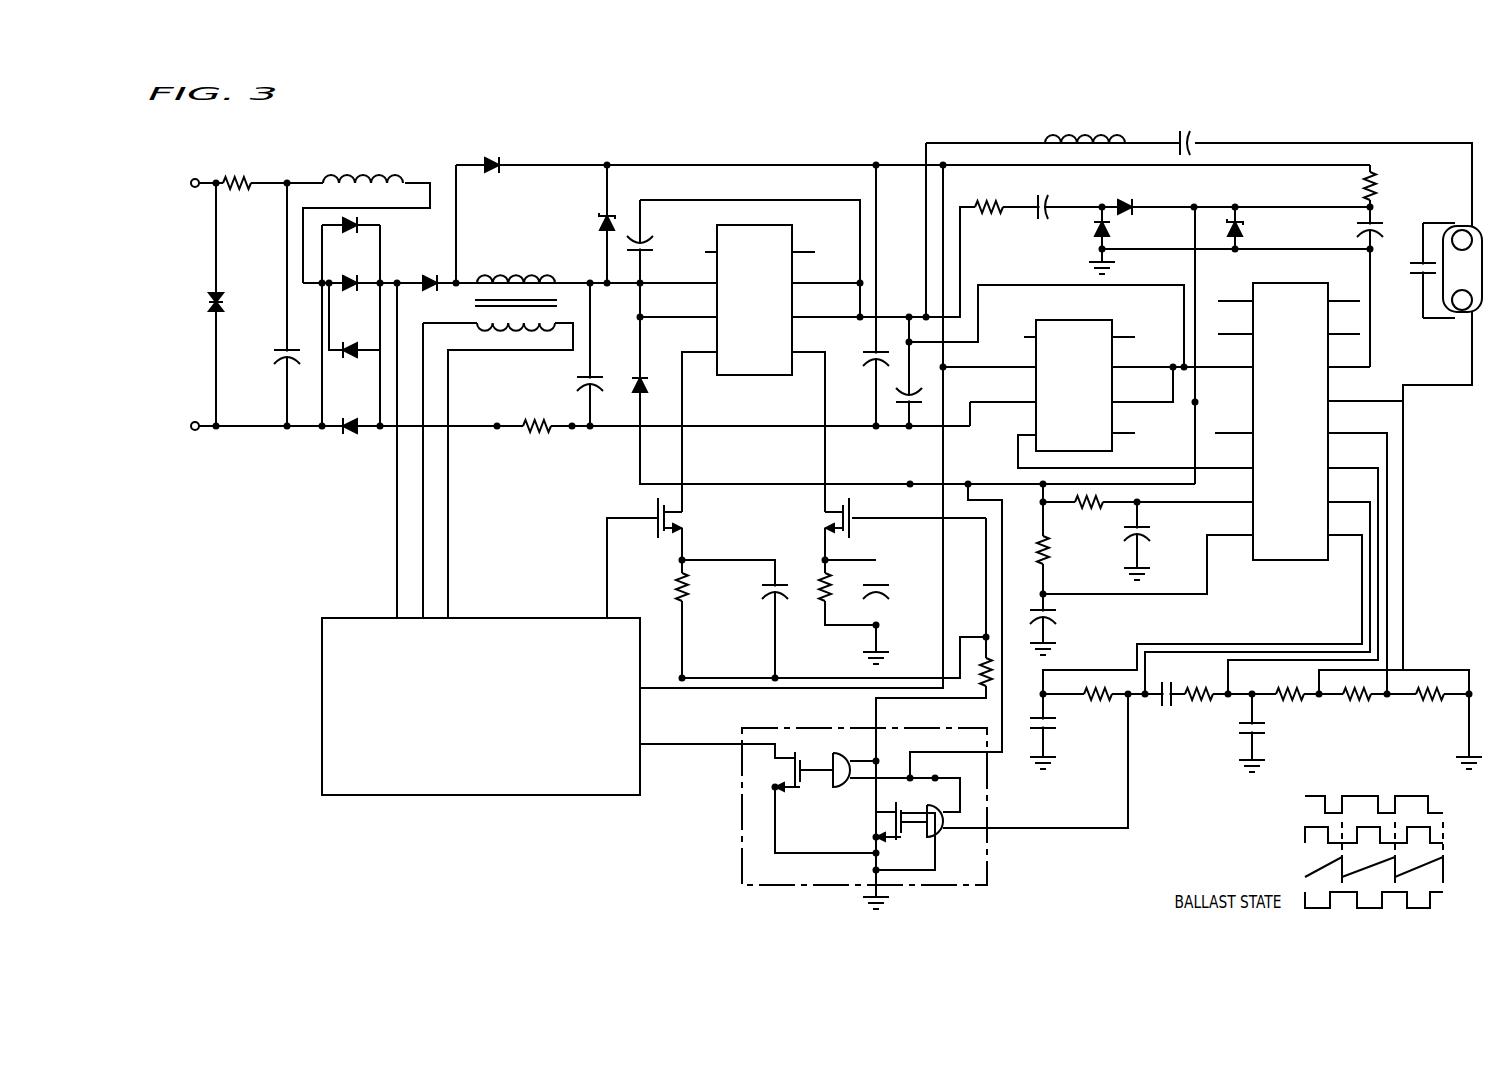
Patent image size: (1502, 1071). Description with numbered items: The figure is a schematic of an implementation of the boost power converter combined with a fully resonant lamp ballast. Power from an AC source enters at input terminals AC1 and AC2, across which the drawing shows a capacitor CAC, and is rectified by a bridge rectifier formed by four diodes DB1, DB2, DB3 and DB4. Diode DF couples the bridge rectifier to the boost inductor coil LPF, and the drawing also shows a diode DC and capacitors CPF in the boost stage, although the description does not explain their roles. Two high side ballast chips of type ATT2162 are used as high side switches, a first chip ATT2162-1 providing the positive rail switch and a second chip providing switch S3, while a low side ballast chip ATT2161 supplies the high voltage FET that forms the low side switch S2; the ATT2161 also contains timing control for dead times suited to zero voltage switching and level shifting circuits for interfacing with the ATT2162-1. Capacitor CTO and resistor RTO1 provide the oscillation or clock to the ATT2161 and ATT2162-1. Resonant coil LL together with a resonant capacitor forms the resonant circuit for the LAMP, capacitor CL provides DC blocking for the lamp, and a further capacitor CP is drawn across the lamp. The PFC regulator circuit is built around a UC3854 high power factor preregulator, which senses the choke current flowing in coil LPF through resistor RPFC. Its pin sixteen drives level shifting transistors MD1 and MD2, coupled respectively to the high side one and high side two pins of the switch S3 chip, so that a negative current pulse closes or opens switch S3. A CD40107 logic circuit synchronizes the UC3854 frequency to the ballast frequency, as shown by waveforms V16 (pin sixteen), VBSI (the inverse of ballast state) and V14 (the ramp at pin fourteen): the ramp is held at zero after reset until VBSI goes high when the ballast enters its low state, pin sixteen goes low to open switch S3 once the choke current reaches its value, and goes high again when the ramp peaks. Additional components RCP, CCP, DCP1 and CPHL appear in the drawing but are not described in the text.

The input terminal AC1 is at (177, 184).
The input terminal AC2 is at (177, 428).
The AC input capacitor CAC is at (266, 357).
The bridge rectifier diode DB1 is at (352, 240).
The bridge rectifier diode DB2 is at (352, 299).
The bridge rectifier diode DB3 is at (352, 366).
The bridge rectifier diode DB4 is at (352, 441).
The diode DF is at (429, 266).
The boost inductor coil LPF is at (516, 290).
The boost diode DC is at (492, 151).
The power factor correction capacitor CPF is at (600, 221).
The resistor RPFC is at (535, 444).
The switch S3 is at (917, 338).
The high side ballast chip ATT2162 is at (757, 313).
The first ATT2162 high side ballast chip ATT2162-1 is at (1077, 373).
The switch S2 is at (1285, 412).
The low side ballast chip ATT2161 is at (1285, 412).
The level shifting transistor MD1 is at (813, 518).
The level shifting transistor MD2 is at (689, 518).
The high power factor preregulator UC3854 is at (720, 655).
The voltage waveform V14 is at (695, 748).
The voltage waveform V16 is at (1198, 714).
The voltage waveform VBSI is at (1254, 824).
The logic circuit CD40107 is at (742, 866).
The charge pump resistor RCP is at (989, 224).
The charge pump capacitor CCP is at (1046, 223).
The charge pump diode DCP1 is at (1148, 198).
The resonant coil LL is at (1085, 125).
The capacitor CL is at (1187, 128).
The parallel lamp capacitor CP is at (1410, 273).
The lamp LAMP is at (1462, 269).
The resistor RTO1 is at (1065, 550).
The capacitor CTO is at (1062, 632).
The phase lock capacitor CPHL is at (1278, 747).